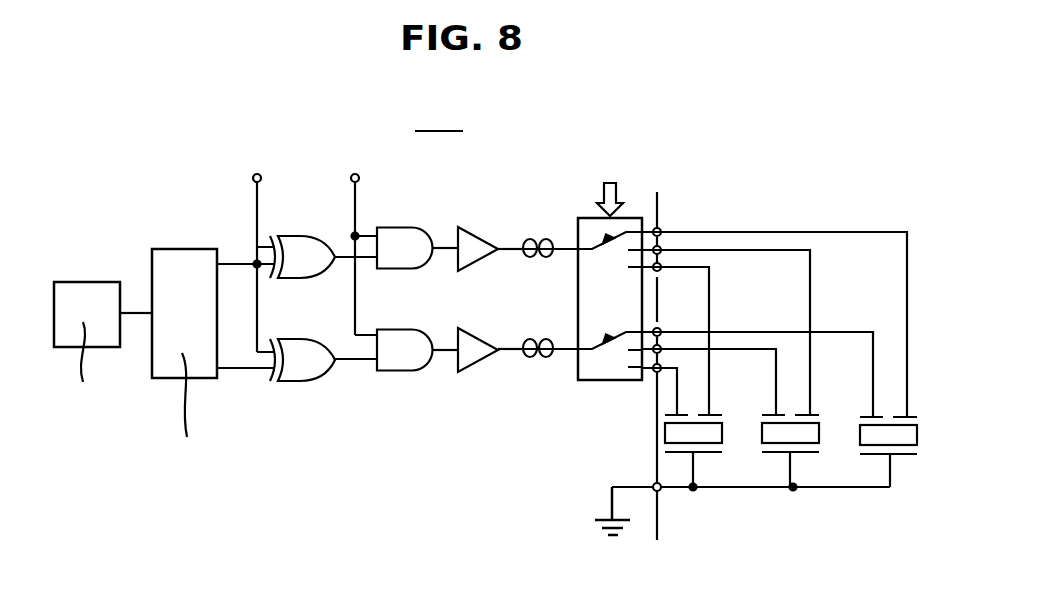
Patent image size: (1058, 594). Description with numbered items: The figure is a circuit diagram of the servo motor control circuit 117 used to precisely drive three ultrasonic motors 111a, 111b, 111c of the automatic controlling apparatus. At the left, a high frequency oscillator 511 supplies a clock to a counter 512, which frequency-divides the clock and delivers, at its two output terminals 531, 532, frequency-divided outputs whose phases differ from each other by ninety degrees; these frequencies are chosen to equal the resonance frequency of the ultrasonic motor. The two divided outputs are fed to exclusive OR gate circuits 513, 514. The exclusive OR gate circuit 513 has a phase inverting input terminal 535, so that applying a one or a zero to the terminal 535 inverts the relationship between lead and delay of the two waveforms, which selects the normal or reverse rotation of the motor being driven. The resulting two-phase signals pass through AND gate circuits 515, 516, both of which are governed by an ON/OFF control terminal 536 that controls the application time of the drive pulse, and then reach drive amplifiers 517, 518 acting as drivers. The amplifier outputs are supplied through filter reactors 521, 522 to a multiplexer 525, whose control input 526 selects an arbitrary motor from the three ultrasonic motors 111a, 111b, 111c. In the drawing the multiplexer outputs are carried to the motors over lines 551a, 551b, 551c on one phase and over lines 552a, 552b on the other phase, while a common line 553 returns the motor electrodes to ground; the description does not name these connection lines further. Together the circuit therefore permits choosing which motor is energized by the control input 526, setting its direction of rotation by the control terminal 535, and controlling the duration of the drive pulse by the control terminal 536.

The high frequency oscillator 511 is at (85, 282).
The counter 512 is at (172, 249).
The exclusive OR gate circuit 513 is at (307, 236).
The exclusive OR gate circuit 514 is at (305, 340).
The AND gate circuit 515 is at (395, 228).
The AND gate circuit 516 is at (400, 332).
The drive amplifier 517 is at (470, 231).
The drive amplifier 518 is at (475, 332).
The filter reactor 521 is at (535, 242).
The filter reactor 522 is at (540, 342).
The multiplexer 525 is at (585, 218).
The control input 526 is at (610, 183).
The output terminal 531 is at (232, 264).
The output terminal 532 is at (233, 368).
The phase inverting input terminal 535 is at (257, 174).
The ON/OFF control terminal 536 is at (355, 174).
The servo motor control circuit 117 is at (439, 116).
The connection line 551a is at (683, 267).
The connection line 551b is at (738, 250).
The connection line 551c is at (813, 232).
The connection line 552a is at (660, 373).
The connection line 552b is at (748, 349).
The common ground line 553 is at (733, 487).
The ultrasonic motor 111a is at (724, 432).
The ultrasonic motor 111b is at (821, 432).
The ultrasonic motor 111c is at (860, 440).